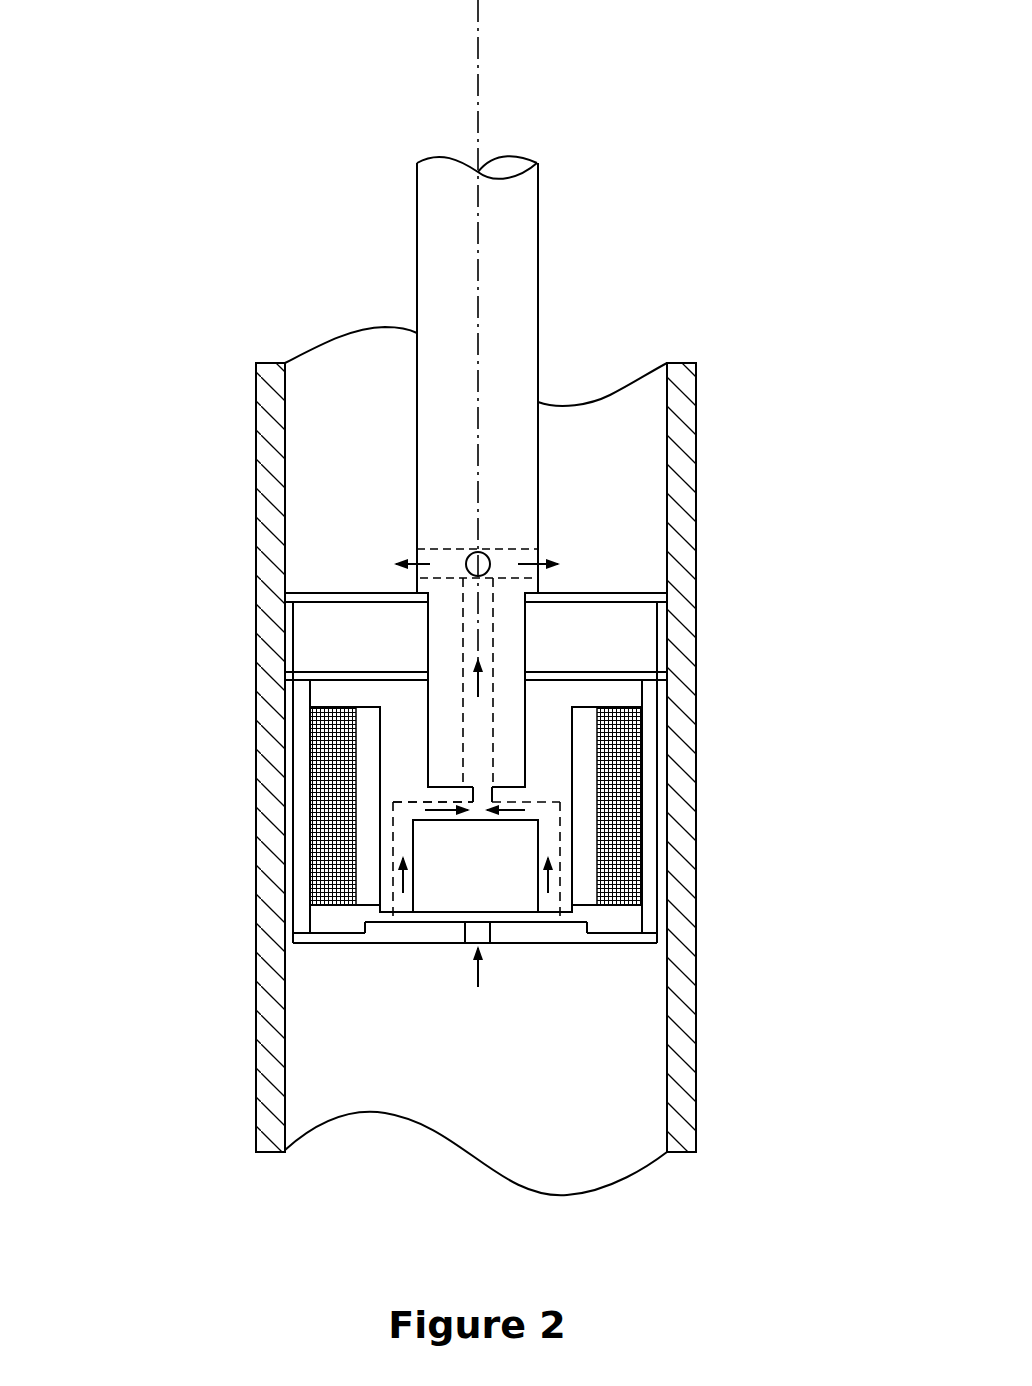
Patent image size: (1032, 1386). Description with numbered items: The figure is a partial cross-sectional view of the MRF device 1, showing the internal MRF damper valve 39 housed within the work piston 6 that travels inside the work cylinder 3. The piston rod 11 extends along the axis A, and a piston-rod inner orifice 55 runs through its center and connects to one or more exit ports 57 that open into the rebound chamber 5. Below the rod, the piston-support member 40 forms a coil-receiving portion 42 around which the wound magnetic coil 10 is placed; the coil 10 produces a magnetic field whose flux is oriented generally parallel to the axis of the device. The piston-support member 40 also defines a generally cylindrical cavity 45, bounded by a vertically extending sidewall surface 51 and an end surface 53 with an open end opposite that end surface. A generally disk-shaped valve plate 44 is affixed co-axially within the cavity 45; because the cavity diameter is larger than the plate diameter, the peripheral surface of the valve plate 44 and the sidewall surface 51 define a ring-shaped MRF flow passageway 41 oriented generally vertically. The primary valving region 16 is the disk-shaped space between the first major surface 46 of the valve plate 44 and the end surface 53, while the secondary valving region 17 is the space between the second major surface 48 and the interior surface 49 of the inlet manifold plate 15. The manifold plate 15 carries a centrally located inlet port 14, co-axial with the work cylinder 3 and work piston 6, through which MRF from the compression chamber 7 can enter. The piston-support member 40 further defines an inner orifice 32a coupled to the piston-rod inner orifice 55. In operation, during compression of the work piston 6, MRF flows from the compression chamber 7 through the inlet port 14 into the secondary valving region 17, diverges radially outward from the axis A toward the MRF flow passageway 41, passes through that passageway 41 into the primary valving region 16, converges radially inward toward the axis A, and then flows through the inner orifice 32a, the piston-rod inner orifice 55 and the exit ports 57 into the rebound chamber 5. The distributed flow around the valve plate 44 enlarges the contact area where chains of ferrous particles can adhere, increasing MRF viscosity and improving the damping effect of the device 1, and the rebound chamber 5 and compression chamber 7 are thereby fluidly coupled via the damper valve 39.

The axis A is at (478, 87).
The MRF device 1 is at (770, 257).
The work cylinder 3 is at (692, 409).
The rebound chamber 5 is at (360, 385).
The compression chamber 7 is at (557, 1086).
The piston rod 11 is at (511, 305).
The exit ports 57 is at (546, 547).
The piston-rod inner orifice 55 is at (464, 604).
The work piston 6 is at (653, 630).
The magnetic coil 10 is at (626, 731).
The piston-support member 40 is at (560, 762).
The MRF flow passageway 41 is at (548, 843).
The coil-receiving portion 42 is at (316, 888).
The inner orifice 32a is at (470, 787).
The primary valving region 16 is at (418, 803).
The sidewall surface 51 is at (392, 851).
The end surface 53 is at (410, 803).
The valve plate 44 is at (488, 896).
The first major surface 46 is at (525, 822).
The cavity 45 is at (388, 901).
The inlet manifold plate 15 is at (413, 931).
The secondary valving region 17 is at (526, 916).
The interior surface 49 is at (433, 920).
The second major surface 48 is at (442, 912).
The inlet port 14 is at (488, 946).
The internal MRF damper valve 39 is at (430, 1005).